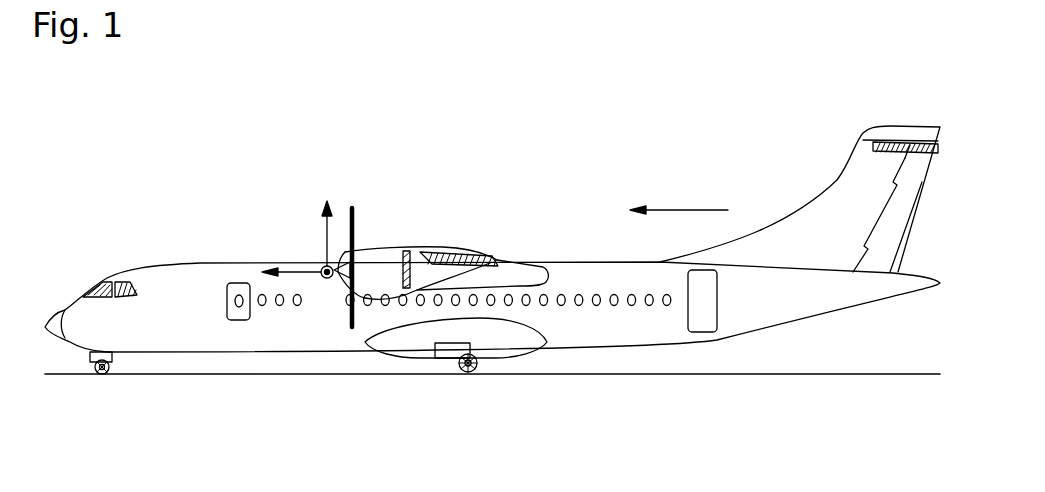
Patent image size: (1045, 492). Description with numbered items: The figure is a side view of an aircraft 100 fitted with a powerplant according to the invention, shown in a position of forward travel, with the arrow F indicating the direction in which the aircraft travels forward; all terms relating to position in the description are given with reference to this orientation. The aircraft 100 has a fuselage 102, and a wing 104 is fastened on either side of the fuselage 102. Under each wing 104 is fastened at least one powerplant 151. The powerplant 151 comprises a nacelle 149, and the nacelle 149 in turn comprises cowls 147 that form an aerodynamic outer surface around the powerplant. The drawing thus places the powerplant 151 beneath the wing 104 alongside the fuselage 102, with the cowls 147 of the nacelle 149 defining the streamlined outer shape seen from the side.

The aircraft 100 is at (580, 177).
The fuselage 102 is at (798, 302).
The wing 104 is at (472, 252).
The cowls 147 is at (377, 273).
The nacelle 149 is at (395, 267).
The powerplant 151 is at (300, 202).